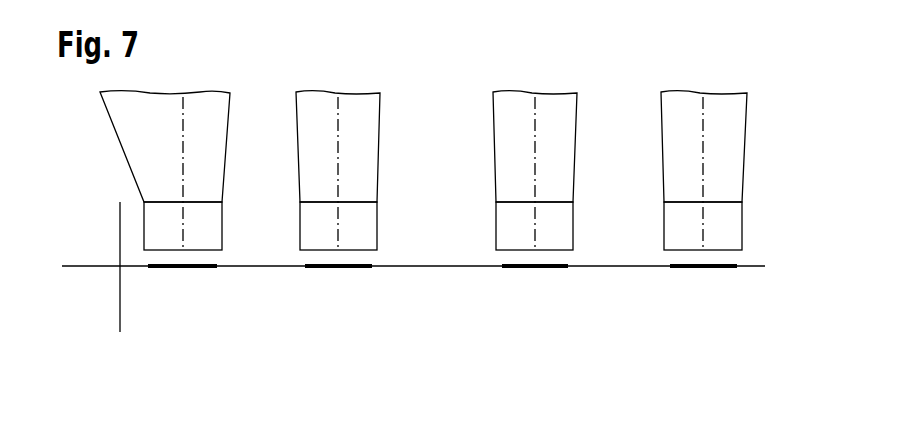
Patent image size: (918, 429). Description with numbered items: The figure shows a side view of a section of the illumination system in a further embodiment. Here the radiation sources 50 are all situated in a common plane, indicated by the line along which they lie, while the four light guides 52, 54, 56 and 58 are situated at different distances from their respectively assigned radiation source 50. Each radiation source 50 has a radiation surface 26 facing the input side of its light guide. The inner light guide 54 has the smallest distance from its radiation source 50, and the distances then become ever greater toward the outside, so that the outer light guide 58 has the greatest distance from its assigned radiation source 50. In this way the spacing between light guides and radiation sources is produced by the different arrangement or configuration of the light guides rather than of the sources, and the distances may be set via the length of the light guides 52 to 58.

The radiation surface 26 is at (169, 263).
The radiation source 50 is at (188, 267).
The light guide 52 is at (722, 115).
The inner light guide 54 is at (555, 115).
The light guide 56 is at (360, 115).
The outer light guide 58 is at (198, 115).